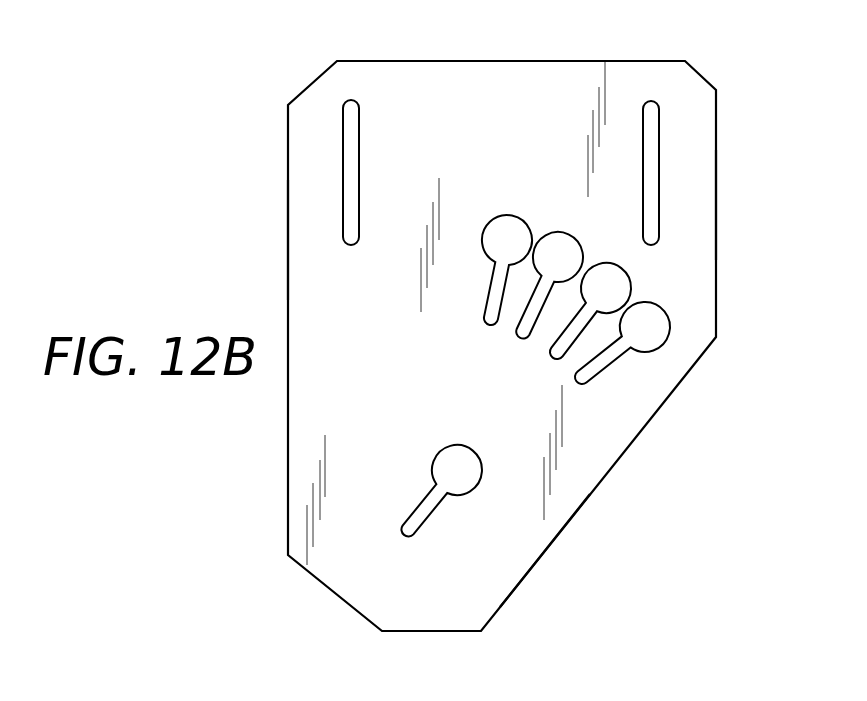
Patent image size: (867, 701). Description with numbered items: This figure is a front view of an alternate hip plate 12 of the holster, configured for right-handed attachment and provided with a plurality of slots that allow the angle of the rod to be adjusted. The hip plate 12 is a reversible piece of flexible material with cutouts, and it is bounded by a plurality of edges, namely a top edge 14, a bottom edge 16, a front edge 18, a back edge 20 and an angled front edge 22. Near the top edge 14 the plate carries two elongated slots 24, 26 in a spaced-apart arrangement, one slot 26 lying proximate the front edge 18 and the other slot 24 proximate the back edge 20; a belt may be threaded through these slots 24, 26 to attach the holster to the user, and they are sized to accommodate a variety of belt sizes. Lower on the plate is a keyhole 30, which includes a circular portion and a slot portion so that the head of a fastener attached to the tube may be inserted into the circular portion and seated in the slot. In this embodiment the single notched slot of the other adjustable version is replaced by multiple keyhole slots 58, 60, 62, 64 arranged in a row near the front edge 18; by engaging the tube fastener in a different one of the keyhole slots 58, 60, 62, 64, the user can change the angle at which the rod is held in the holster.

The hip plate 12 is at (670, 53).
The top edge 14 is at (456, 52).
The bottom edge 16 is at (433, 641).
The front edge 18 is at (727, 209).
The back edge 20 is at (279, 243).
The angled front edge 22 is at (546, 562).
The elongated slot 24 is at (361, 137).
The elongated slot 26 is at (660, 123).
The keyhole 30 is at (446, 452).
The keyhole slot 58 is at (488, 322).
The keyhole slot 60 is at (521, 346).
The keyhole slot 62 is at (556, 367).
The keyhole slot 64 is at (580, 387).